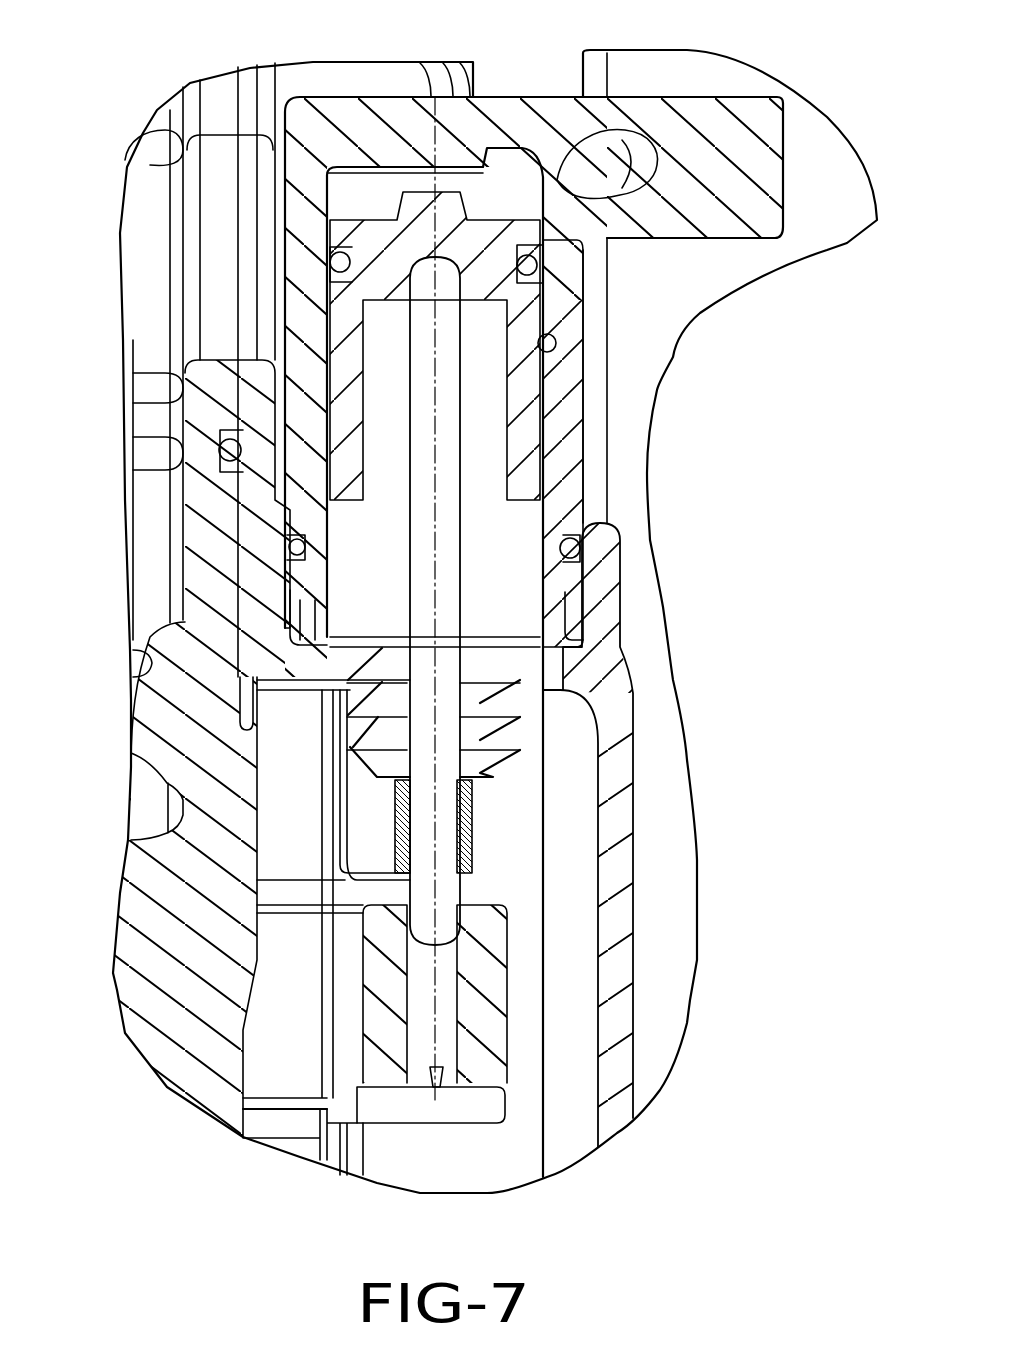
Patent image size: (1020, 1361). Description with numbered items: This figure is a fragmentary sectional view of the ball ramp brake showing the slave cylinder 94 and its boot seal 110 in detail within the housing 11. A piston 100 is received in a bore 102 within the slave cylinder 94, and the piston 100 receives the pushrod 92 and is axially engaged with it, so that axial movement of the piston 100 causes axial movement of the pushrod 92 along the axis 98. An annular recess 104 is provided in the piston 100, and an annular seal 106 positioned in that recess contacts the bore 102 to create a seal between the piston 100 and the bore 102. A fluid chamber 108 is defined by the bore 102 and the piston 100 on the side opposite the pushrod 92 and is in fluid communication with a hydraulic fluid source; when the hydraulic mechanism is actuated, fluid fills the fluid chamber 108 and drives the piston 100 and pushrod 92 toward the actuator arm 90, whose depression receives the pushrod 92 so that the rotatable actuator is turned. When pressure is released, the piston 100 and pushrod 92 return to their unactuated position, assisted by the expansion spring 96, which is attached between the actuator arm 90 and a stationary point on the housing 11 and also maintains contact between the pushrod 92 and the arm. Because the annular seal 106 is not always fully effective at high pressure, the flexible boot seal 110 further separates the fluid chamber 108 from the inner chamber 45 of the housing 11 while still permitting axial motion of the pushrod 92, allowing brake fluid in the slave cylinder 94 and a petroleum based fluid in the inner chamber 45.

The housing 11 is at (637, 1083).
The inner chamber 45 is at (568, 1018).
The actuator arm 90 is at (480, 1000).
The pushrod 92 is at (447, 897).
The slave cylinder 94 is at (602, 495).
The expansion spring 96 is at (470, 817).
The axis 98 is at (435, 1093).
The piston 100 is at (523, 437).
The bore 102 is at (558, 346).
The annular recess 104 is at (535, 272).
The annular seal 106 is at (333, 262).
The fluid chamber 108 is at (497, 210).
The boot seal 110 is at (480, 703).